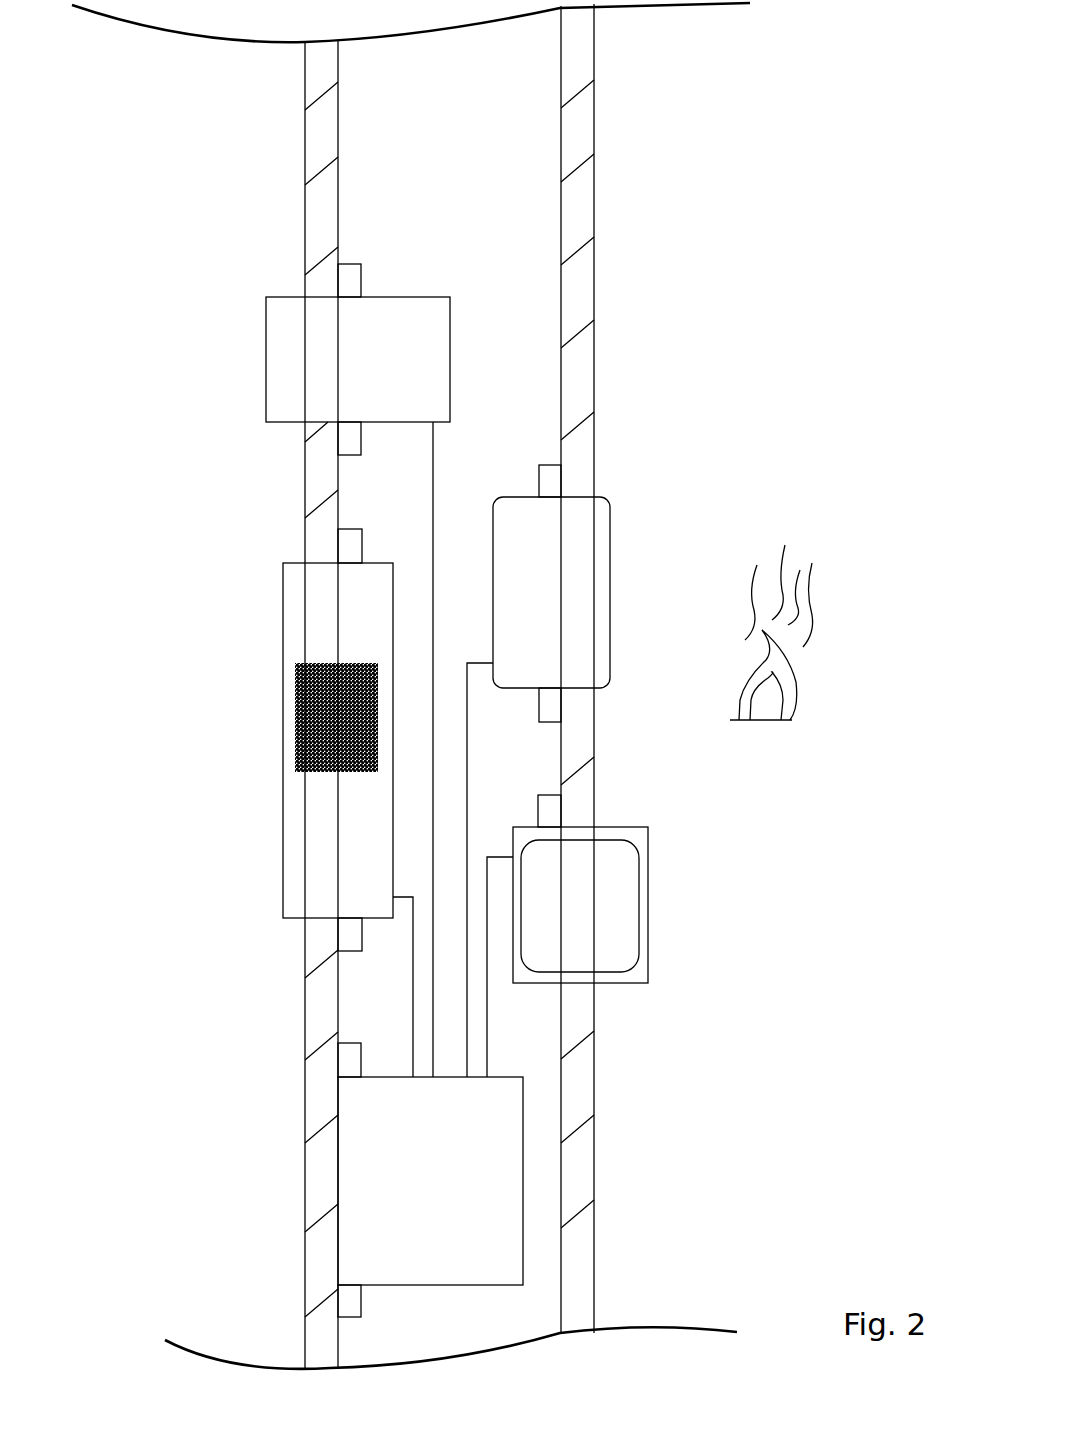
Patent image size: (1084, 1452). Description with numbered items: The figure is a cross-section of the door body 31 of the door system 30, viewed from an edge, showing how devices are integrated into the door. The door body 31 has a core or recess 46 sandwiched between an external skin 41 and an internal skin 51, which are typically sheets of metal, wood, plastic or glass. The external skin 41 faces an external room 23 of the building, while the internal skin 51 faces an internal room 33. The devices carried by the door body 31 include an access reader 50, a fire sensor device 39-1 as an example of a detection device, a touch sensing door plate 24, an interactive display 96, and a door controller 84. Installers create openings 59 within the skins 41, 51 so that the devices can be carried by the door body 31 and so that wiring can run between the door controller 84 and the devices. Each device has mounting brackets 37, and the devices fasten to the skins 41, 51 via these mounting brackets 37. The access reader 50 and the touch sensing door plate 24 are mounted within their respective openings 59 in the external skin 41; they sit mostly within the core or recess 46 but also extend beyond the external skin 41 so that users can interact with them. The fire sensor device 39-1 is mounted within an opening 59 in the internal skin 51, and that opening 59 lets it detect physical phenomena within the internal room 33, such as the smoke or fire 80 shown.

The door system 30 is at (655, 94).
The door body 31 is at (606, 197).
The internal skin 51 is at (596, 1211).
The external skin 41 is at (305, 1005).
The mounting brackets 37 is at (350, 285).
The openings 59 is at (318, 298).
The external room 23 is at (116, 497).
The internal room 33 is at (861, 481).
The core or recess 46 is at (423, 239).
The access reader 50 is at (347, 411).
The touch sensing door plate 24 is at (327, 909).
The fire sensor device 39-1 is at (532, 627).
The interactive display 96 is at (620, 897).
The door controller 84 is at (430, 1181).
The smoke/fire 80 is at (798, 685).